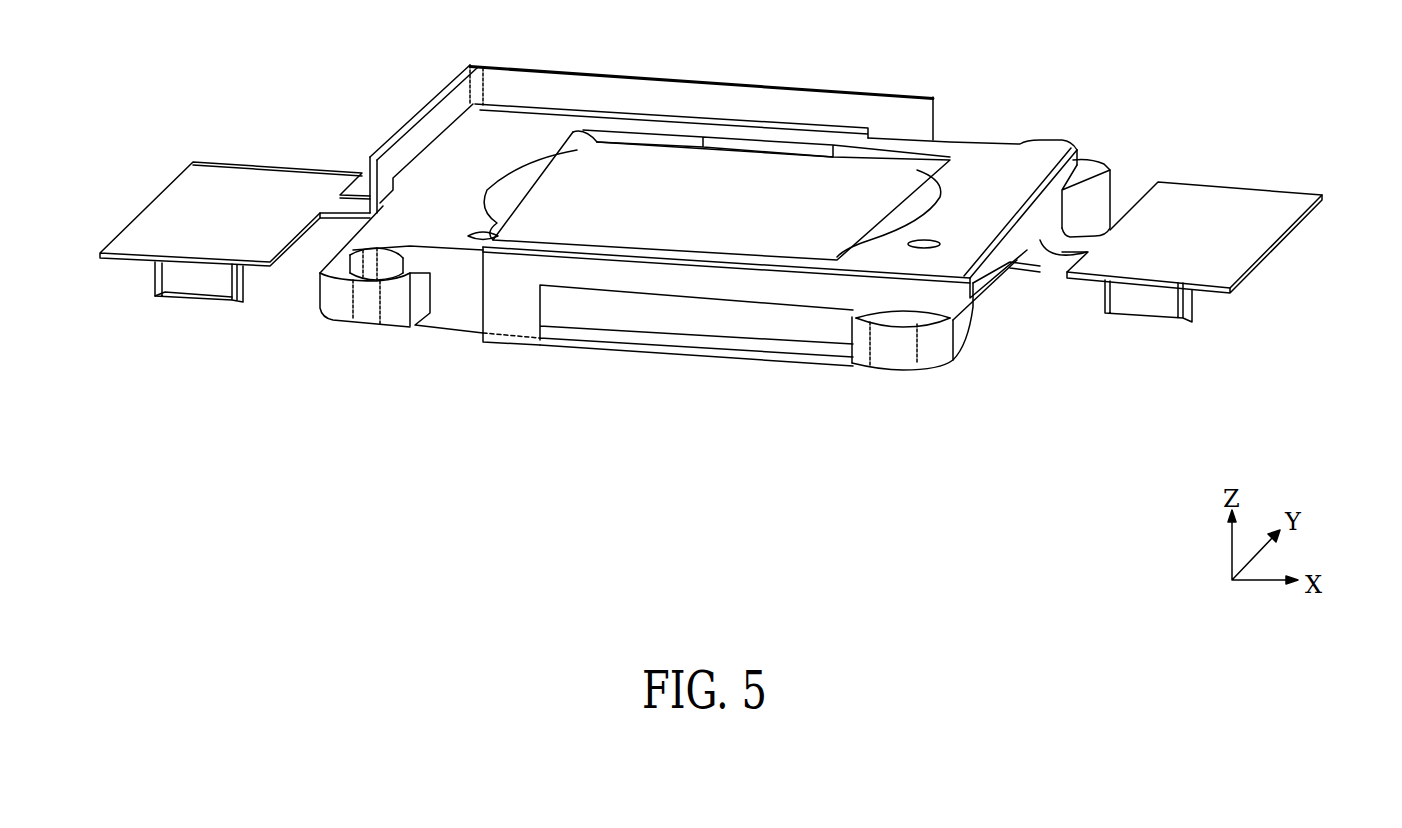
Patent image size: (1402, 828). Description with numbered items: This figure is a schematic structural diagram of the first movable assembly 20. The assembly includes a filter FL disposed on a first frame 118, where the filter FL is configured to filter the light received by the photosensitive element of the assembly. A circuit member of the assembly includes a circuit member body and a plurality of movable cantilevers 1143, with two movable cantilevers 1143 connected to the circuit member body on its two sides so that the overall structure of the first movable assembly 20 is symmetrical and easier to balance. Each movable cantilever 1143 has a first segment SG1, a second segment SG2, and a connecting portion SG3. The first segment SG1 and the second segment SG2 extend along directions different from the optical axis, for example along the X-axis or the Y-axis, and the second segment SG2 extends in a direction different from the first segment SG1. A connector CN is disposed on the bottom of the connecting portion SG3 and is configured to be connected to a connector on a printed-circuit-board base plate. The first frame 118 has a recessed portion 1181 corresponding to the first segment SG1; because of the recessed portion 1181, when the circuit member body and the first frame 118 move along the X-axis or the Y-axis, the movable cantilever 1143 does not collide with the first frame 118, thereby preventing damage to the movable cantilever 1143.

The first movable assembly 20 is at (730, 233).
The first frame 118 is at (1045, 148).
The movable cantilever 1143 is at (750, 305).
The recessed portion 1181 is at (893, 327).
The filter FL is at (887, 178).
The first segment SG1 is at (668, 275).
The second segment SG2 is at (980, 285).
The connecting portion SG3 is at (1267, 200).
The connector CN is at (202, 285).